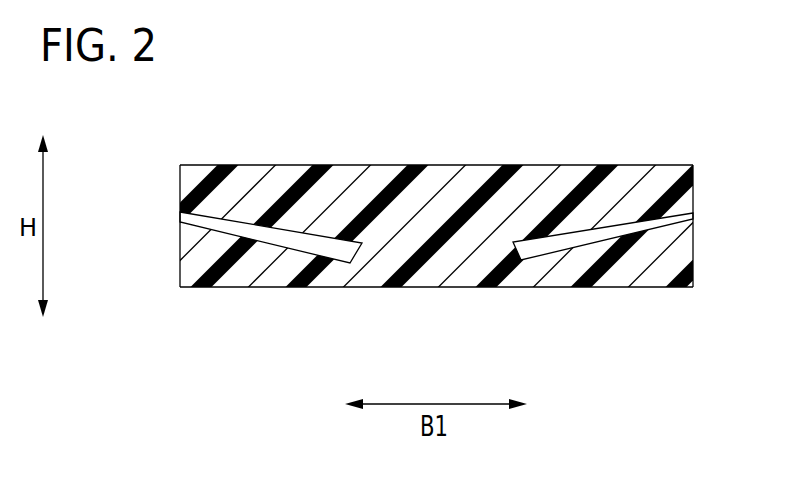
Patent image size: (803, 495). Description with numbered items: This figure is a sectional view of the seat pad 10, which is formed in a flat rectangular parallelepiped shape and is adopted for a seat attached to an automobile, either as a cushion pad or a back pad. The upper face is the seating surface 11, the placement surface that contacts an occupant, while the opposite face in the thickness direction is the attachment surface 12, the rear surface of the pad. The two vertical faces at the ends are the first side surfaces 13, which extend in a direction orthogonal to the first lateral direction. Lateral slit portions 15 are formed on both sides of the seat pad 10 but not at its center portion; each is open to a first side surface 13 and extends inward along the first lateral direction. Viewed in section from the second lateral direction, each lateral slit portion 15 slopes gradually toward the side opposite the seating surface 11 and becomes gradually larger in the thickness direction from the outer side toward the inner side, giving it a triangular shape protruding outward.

The seat pad 10 is at (418, 195).
The seating surface 11 is at (443, 165).
The attachment surface 12 is at (434, 288).
The first side surface 13 is at (182, 253).
The lateral slit portion 15 is at (170, 209).